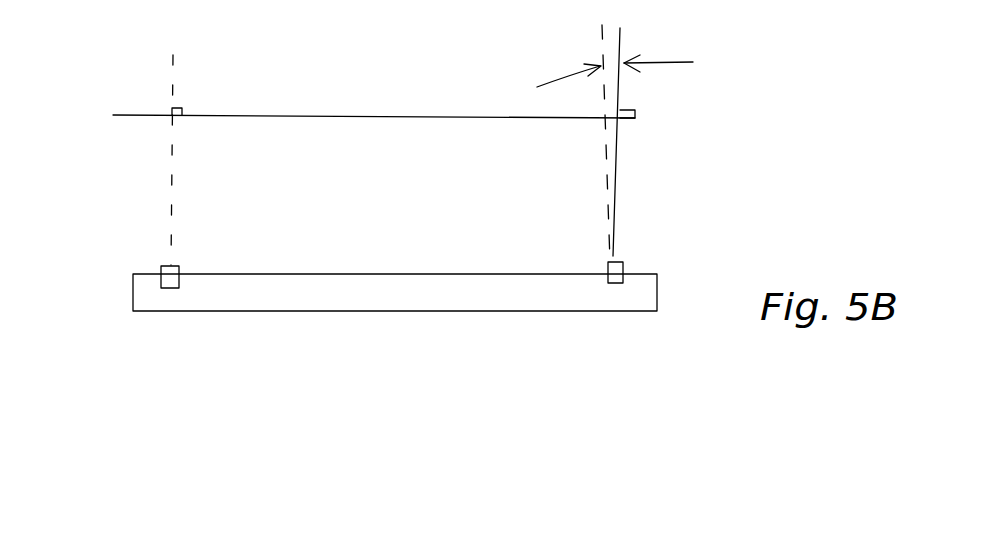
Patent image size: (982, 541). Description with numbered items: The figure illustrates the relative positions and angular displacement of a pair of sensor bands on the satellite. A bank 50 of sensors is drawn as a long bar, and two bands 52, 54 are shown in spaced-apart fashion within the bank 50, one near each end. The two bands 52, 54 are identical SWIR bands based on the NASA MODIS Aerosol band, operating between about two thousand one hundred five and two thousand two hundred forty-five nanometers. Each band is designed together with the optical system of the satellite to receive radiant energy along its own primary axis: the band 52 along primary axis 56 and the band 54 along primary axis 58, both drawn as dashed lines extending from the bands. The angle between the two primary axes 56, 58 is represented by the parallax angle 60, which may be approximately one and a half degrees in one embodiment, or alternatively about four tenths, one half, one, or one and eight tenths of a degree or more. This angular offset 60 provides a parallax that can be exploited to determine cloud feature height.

The bank 50 is at (393, 297).
The band 52 is at (178, 286).
The band 54 is at (606, 284).
The primary axis 56 is at (171, 193).
The primary axis 58 is at (606, 163).
The parallax angle 60 is at (610, 72).